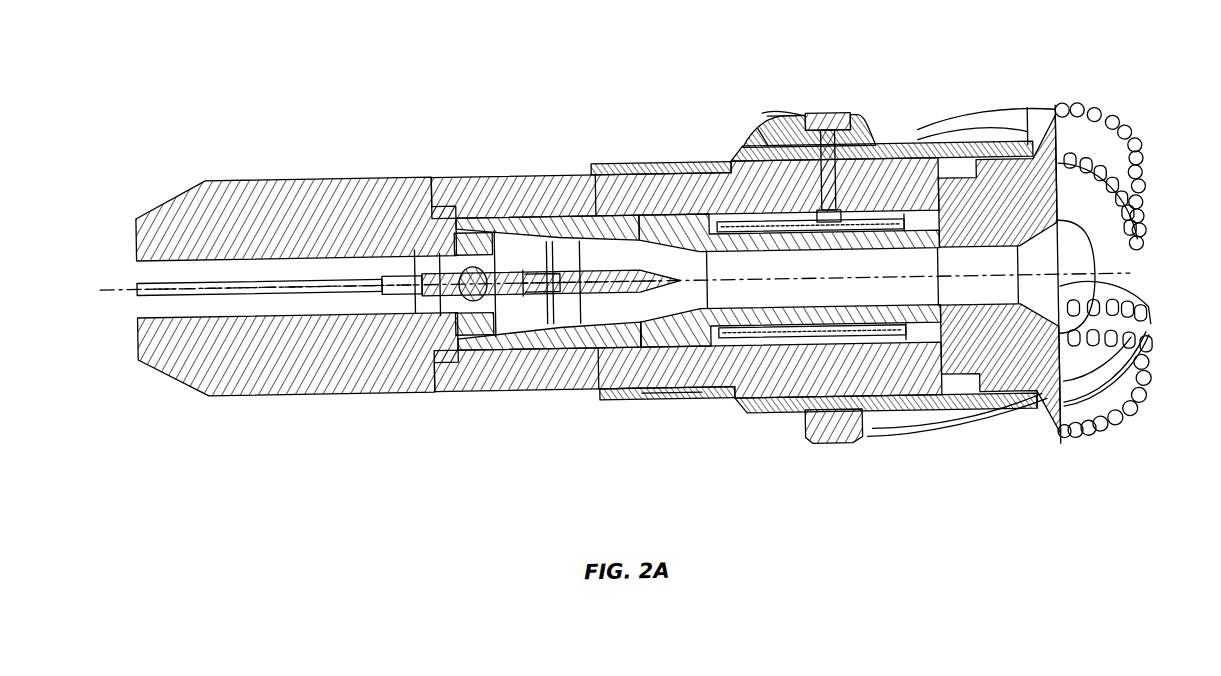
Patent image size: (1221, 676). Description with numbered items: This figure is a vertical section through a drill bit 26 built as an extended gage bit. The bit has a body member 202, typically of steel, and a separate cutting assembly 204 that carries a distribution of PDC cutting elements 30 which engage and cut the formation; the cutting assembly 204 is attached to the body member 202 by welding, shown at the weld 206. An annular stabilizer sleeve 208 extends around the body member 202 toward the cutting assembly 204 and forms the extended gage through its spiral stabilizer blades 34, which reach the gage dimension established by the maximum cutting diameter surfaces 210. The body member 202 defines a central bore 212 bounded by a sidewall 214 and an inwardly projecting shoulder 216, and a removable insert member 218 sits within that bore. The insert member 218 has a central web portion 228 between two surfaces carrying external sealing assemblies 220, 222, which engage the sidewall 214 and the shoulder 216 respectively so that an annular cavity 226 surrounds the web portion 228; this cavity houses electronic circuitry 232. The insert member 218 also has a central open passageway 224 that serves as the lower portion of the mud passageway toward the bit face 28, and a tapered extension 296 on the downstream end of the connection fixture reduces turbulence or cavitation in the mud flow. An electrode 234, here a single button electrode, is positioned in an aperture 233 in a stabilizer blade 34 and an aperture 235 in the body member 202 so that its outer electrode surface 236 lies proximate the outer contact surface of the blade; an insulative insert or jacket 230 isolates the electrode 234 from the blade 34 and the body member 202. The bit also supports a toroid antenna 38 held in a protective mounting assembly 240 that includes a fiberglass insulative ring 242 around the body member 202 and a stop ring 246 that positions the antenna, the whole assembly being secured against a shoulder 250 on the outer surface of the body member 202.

The drill bit 26 is at (580, 151).
The bit face 28 is at (1158, 242).
The PDC cutting elements 30 is at (1119, 119).
The stabilizer blades 34 is at (790, 138).
The toroid antenna 38 is at (672, 400).
The body member 202 is at (580, 385).
The cutting assembly 204 is at (1045, 424).
The weld 206 is at (965, 164).
The annular stabilizer sleeve 208 is at (910, 447).
The maximum cutting diameter surfaces 210 is at (1058, 113).
The central bore 212 is at (725, 386).
The sidewall 214 is at (645, 396).
The inwardly projecting shoulder 216 is at (887, 350).
The removable insert member 218 is at (617, 165).
The sealing assembly 220 is at (695, 166).
The sealing assembly 222 is at (672, 176).
The central open passageway 224 is at (842, 330).
The annular cavity 226 is at (760, 340).
The central web portion 228 is at (806, 416).
The insulative insert or jacket 230 is at (872, 134).
The electronic circuitry 232 is at (866, 208).
The aperture 233 is at (797, 148).
The electrode 234 is at (838, 115).
The aperture 235 is at (772, 115).
The outer electrode surface 236 is at (826, 113).
The protective mounting assembly 240 is at (612, 412).
The fiberglass insulative ring 242 is at (720, 386).
The stop ring 246 is at (660, 400).
The shoulder 250 is at (733, 158).
The tapered extension 296 is at (525, 378).